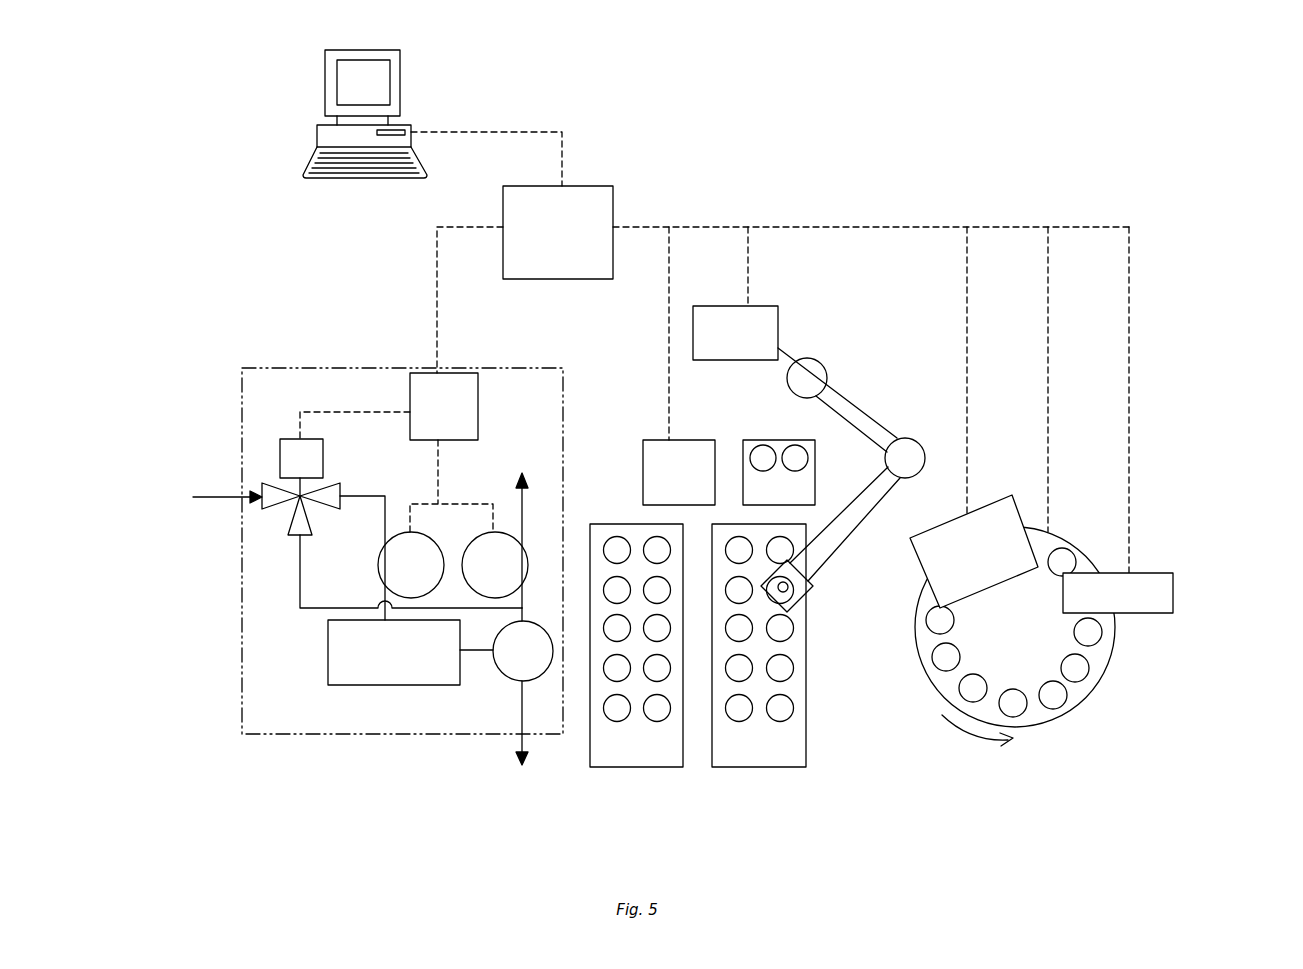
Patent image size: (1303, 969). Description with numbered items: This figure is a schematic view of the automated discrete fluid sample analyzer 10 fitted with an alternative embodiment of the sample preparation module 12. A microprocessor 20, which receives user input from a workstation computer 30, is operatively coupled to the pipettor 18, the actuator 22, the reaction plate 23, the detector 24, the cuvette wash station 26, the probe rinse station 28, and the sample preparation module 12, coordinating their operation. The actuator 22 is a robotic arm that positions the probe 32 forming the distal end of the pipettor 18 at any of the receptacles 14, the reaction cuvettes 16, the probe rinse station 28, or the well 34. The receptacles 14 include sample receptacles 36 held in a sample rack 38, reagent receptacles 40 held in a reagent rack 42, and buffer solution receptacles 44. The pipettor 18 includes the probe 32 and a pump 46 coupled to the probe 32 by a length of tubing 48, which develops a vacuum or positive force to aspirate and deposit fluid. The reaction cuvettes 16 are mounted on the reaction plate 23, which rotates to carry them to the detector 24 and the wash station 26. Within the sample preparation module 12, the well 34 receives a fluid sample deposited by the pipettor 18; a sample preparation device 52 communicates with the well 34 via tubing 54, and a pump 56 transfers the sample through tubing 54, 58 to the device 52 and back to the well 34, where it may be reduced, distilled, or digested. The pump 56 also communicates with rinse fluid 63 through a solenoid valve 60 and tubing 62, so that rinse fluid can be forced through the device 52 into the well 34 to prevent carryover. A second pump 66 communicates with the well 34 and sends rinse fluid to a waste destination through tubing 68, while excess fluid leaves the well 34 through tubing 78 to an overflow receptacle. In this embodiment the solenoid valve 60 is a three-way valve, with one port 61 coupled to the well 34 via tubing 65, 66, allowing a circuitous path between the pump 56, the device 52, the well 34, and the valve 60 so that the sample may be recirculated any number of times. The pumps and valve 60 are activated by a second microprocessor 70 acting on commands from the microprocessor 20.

The automated discrete fluid sample analyzer 10 is at (1098, 150).
The sample preparation module 12 is at (292, 366).
The receptacles 14 is at (760, 425).
The reaction cuvettes 16 is at (1072, 675).
The pipettor 18 is at (792, 300).
The microprocessor 20 is at (598, 200).
The actuator 22 is at (866, 400).
The reaction plate 23 is at (1037, 727).
The detector 24 is at (1160, 585).
The cuvette wash station 26 is at (982, 520).
The probe rinse station 28 is at (650, 447).
The workstation computer 30 is at (397, 76).
The probe 32 is at (790, 588).
The well 34 is at (510, 672).
The sample receptacles 36 is at (657, 547).
The sample racks 38 is at (630, 768).
The reagent receptacles 40 is at (783, 712).
The reagent racks 42 is at (752, 770).
The buffer solution receptacles 44 is at (763, 460).
The pump 46 is at (778, 334).
The tubing 48 is at (885, 432).
The sample preparation device 52 is at (355, 686).
The tubing 54 is at (477, 650).
The pump 56 is at (380, 565).
The tubing 58 is at (385, 590).
The solenoid valve 60 is at (270, 490).
The port 61 is at (290, 530).
The tubing 62 is at (357, 490).
The rinse fluid 63 is at (218, 500).
The tubing 65 is at (302, 589).
The tubing 66 is at (522, 599).
The tubing 68 is at (523, 515).
The second microprocessor 70 is at (465, 404).
The tubing 78 is at (520, 708).